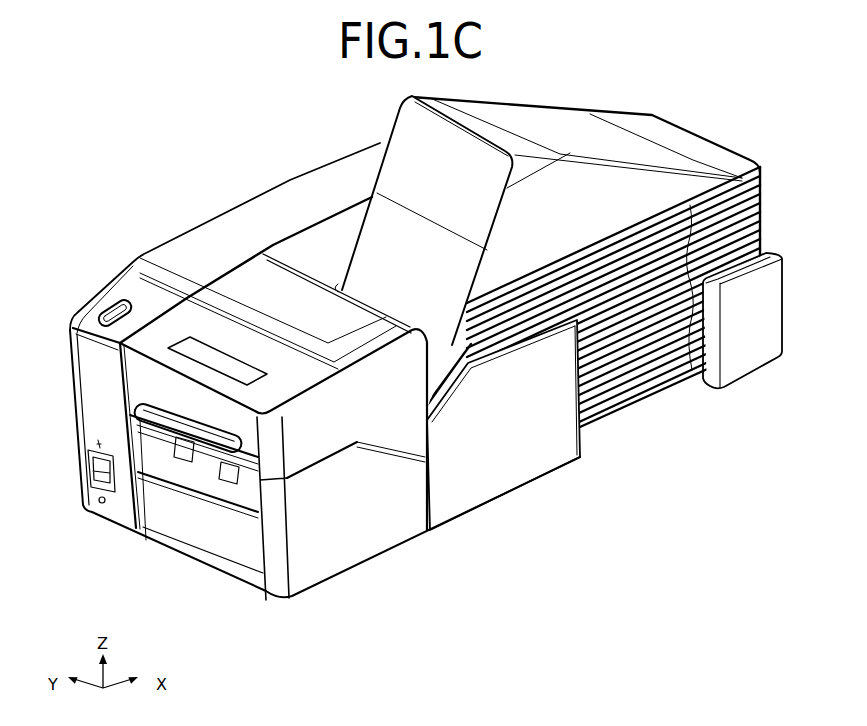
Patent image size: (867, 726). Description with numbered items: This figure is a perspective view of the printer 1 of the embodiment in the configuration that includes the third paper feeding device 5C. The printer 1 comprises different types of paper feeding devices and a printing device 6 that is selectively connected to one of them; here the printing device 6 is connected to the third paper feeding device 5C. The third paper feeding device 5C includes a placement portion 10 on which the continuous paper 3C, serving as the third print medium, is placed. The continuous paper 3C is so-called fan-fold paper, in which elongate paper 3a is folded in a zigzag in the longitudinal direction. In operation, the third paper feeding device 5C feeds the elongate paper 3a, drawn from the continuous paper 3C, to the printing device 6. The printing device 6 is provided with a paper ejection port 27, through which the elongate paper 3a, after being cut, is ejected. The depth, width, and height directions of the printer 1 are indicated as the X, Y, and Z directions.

The printer 1 is at (768, 394).
The elongate paper 3a is at (412, 163).
The continuous paper 3C is at (692, 187).
The third paper feeding device 5C is at (500, 483).
The printing device 6 is at (358, 553).
The placement portion 10 is at (338, 251).
The paper ejection port 27 is at (112, 410).